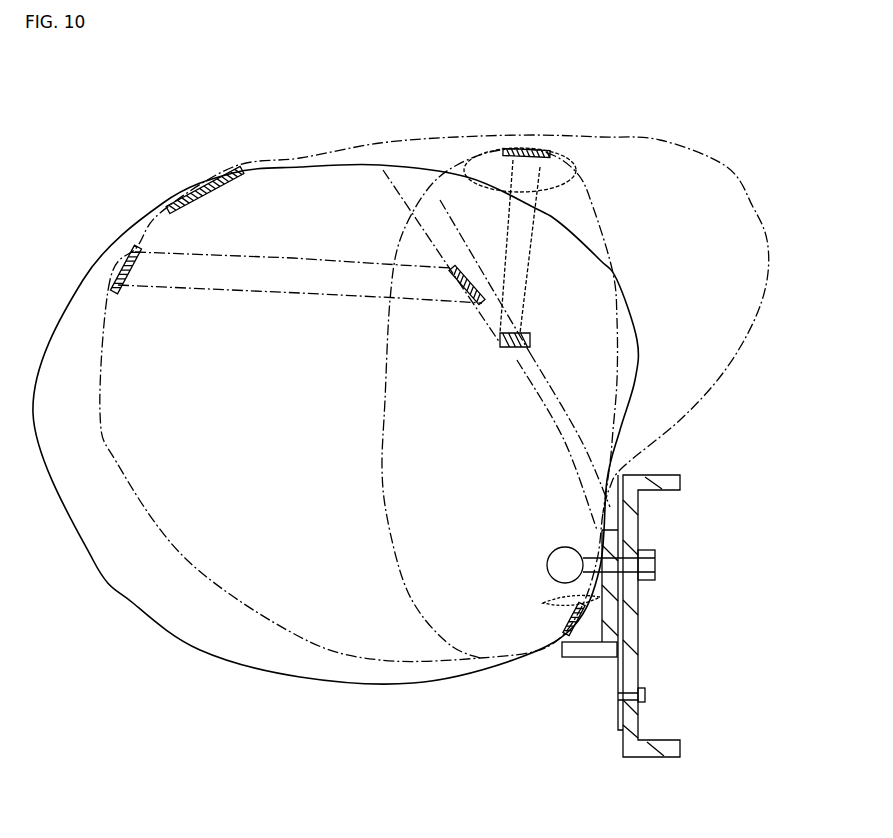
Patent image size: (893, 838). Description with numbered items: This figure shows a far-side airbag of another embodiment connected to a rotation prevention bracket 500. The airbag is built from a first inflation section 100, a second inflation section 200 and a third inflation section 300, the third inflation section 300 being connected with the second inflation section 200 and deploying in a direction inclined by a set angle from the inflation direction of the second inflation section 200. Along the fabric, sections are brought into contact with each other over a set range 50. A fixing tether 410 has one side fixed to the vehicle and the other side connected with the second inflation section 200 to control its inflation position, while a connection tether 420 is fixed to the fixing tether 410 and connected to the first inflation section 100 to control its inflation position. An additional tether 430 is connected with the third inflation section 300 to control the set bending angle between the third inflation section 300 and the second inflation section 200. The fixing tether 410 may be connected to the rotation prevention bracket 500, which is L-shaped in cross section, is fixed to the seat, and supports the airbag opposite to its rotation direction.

The set range 50 is at (182, 200).
The first inflation section 100 is at (345, 685).
The second inflation section 200 is at (737, 173).
The third inflation section 300 is at (603, 207).
The fixing tether 410 is at (457, 213).
The connection tether 420 is at (335, 263).
The additional tether 430 is at (573, 173).
The rotation prevention bracket 500 is at (577, 657).